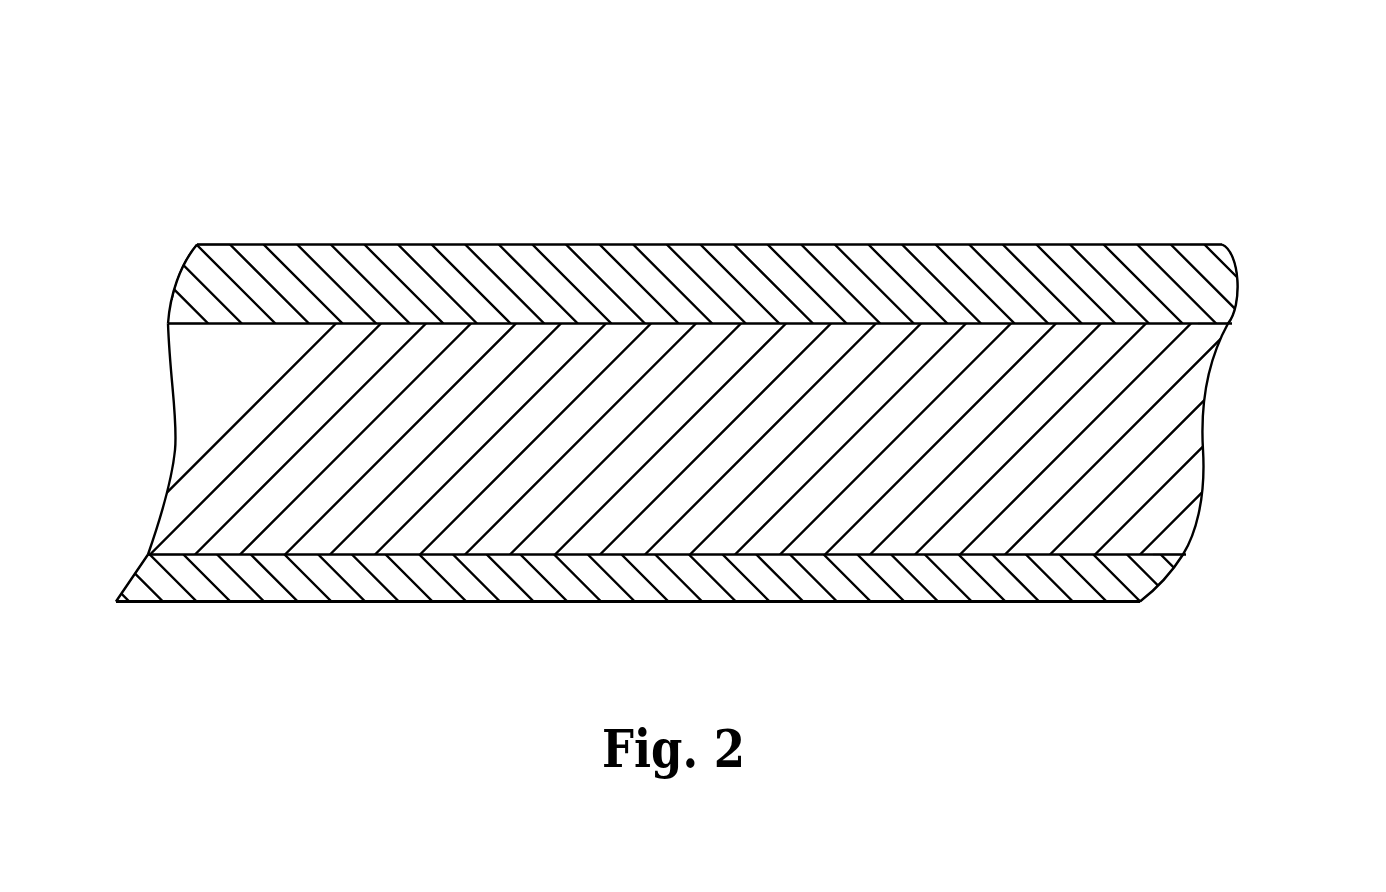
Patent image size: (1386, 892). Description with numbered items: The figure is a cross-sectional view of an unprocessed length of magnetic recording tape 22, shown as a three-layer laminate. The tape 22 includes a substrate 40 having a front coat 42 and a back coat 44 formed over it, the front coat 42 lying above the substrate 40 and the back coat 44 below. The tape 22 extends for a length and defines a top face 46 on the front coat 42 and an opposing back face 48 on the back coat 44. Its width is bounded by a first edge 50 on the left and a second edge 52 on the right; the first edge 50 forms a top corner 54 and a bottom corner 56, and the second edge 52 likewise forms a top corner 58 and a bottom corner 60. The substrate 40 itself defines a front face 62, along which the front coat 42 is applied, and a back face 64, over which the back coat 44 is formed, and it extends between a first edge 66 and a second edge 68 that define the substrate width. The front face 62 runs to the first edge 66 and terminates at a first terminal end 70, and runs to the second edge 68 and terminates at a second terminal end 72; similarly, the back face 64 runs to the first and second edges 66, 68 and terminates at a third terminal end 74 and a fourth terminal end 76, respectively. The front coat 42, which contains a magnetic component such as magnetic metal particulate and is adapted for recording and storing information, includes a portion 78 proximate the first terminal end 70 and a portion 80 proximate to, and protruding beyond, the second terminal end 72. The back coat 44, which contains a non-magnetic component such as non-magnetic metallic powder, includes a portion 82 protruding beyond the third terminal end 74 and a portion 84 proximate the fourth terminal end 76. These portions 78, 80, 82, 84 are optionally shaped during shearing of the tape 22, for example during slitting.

The tape 22 is at (701, 388).
The substrate 40 is at (1040, 352).
The front coat 42 is at (914, 275).
The back coat 44 is at (975, 580).
The top face 46 is at (740, 242).
The back face 48 is at (667, 605).
The first edge 50 is at (119, 399).
The second edge 52 is at (1261, 410).
The top corner 54 is at (157, 252).
The bottom corner 56 is at (93, 602).
The top corner 58 is at (1280, 261).
The bottom corner 60 is at (1212, 600).
The front face 62 is at (542, 316).
The back face 64 is at (501, 563).
The first edge 66 is at (173, 445).
The second edge 68 is at (1207, 478).
The first terminal end 70 is at (168, 323).
The second terminal end 72 is at (1228, 324).
The third terminal end 74 is at (150, 554).
The fourth terminal end 76 is at (1185, 554).
The portion 78 is at (205, 272).
The portion 80 is at (1220, 274).
The portion 82 is at (140, 580).
The portion 84 is at (1146, 577).